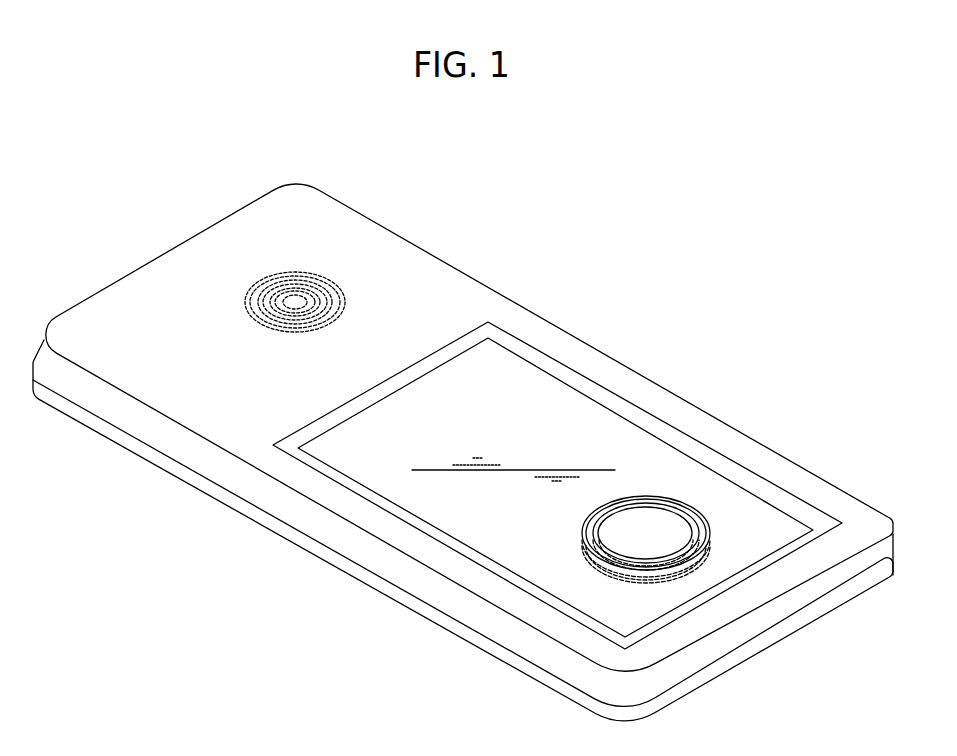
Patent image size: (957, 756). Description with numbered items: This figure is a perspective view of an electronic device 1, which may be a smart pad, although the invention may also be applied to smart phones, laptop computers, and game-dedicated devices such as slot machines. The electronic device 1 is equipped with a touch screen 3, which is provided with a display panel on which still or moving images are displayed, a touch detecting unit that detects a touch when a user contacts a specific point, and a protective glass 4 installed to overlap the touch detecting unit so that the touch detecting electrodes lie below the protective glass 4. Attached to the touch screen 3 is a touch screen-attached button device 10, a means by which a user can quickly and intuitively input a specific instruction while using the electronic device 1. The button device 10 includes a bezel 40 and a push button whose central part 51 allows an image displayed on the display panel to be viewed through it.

The electronic device 1 is at (450, 232).
The touch screen 3 is at (513, 376).
The protective glass 4 is at (572, 418).
The touch screen-attached button device 10 is at (708, 501).
The central part 51 is at (645, 520).
The bezel 40 is at (598, 575).